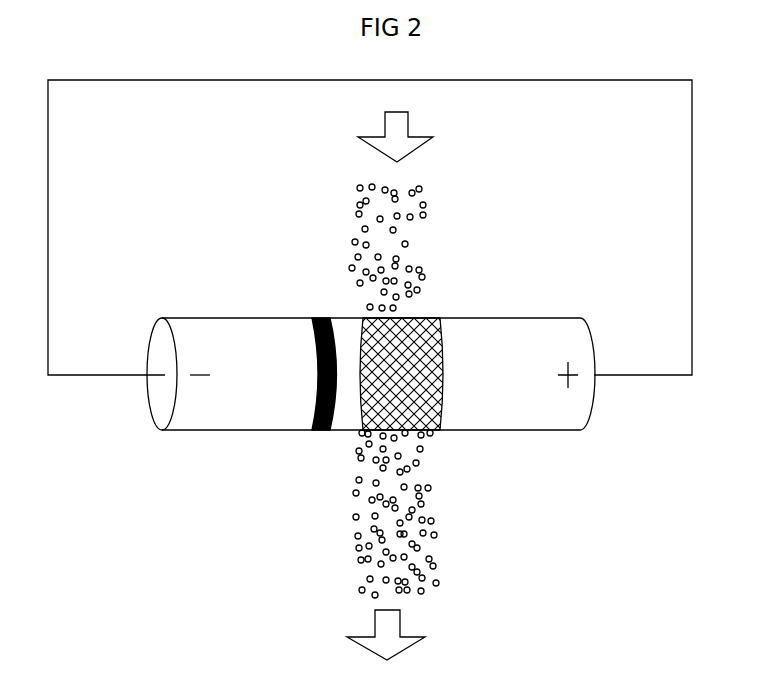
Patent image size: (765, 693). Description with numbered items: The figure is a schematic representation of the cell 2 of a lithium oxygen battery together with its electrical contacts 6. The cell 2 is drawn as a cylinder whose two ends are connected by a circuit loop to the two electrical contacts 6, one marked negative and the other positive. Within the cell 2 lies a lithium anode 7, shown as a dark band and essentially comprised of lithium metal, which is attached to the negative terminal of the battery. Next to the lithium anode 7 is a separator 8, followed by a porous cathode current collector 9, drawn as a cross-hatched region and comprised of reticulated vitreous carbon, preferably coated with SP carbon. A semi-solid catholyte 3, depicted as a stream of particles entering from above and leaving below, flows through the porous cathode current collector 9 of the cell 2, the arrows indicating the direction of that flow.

The cell 2 is at (432, 315).
The semi-solid catholyte 3 is at (431, 241).
The electrical contacts 6 is at (255, 384).
The lithium anode 7 is at (318, 432).
The separator 8 is at (341, 432).
The porous cathode current collector 9 is at (450, 432).